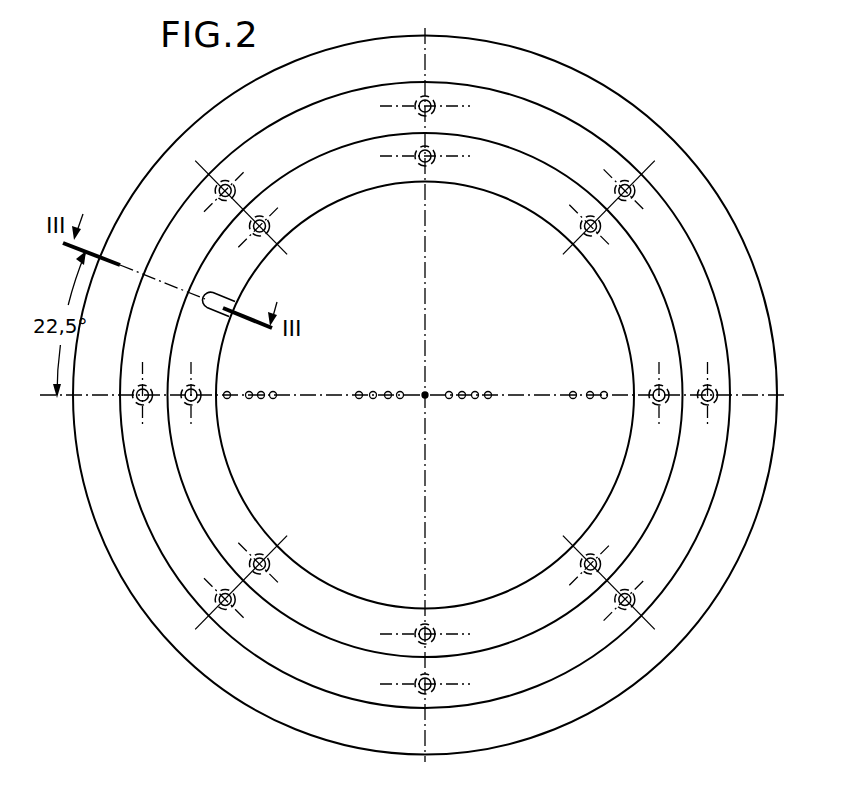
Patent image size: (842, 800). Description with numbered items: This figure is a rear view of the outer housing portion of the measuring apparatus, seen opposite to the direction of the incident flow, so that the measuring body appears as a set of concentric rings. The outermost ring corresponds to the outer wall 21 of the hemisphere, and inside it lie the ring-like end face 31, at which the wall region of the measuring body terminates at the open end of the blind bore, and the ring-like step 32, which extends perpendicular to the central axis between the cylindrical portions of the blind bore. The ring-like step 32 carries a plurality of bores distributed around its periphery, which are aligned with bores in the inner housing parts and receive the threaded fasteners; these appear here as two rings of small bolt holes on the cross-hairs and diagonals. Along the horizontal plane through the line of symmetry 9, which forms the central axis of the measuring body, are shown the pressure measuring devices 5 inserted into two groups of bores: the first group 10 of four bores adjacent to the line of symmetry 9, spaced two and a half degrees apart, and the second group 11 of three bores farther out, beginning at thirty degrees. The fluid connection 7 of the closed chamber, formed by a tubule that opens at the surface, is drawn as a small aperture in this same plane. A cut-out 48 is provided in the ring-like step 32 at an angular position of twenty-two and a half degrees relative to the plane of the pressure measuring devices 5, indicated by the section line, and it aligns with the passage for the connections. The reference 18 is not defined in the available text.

The pressure measuring devices 5 is at (250, 391).
The fluid connection 7 is at (228, 399).
The line of symmetry 9 is at (427, 399).
The first group of bores 10 is at (438, 355).
The second group of bores 11 is at (285, 405).
The disk 18 is at (596, 79).
The outer wall 21 is at (749, 560).
The ring-like end face 31 is at (700, 506).
The ring-like step 32 is at (655, 496).
The cut-out 48 is at (229, 306).